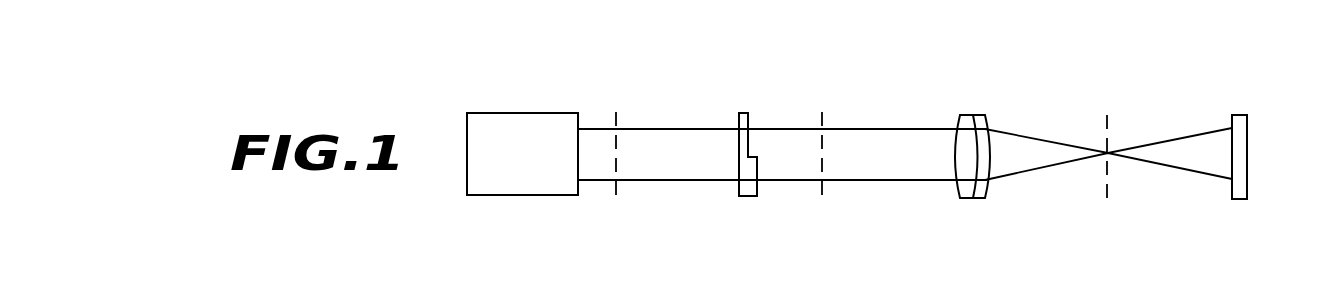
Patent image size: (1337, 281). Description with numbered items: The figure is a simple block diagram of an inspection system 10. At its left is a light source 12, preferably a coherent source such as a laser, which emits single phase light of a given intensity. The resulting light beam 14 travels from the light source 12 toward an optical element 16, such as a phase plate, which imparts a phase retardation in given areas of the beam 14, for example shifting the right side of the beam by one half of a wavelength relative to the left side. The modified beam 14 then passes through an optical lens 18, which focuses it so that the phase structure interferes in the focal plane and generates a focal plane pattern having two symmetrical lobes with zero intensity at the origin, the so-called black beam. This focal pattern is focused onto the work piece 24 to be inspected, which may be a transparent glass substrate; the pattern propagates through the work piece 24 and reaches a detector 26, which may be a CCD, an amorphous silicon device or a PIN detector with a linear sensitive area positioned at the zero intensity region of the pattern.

The inspection system 10 is at (722, 257).
The light source 12 is at (525, 113).
The light beam 14 is at (655, 129).
The optical element 16 is at (750, 113).
The optical lens 18 is at (977, 112).
The work piece 24 is at (1110, 113).
The detector 26 is at (1240, 115).